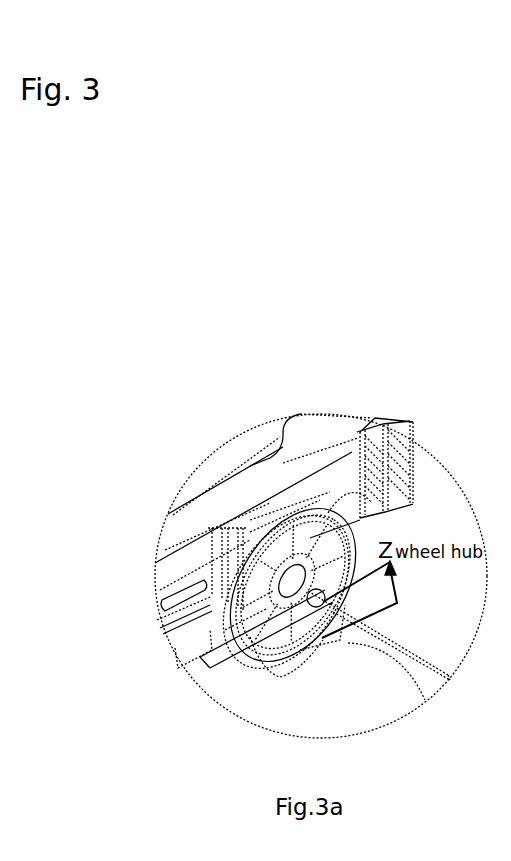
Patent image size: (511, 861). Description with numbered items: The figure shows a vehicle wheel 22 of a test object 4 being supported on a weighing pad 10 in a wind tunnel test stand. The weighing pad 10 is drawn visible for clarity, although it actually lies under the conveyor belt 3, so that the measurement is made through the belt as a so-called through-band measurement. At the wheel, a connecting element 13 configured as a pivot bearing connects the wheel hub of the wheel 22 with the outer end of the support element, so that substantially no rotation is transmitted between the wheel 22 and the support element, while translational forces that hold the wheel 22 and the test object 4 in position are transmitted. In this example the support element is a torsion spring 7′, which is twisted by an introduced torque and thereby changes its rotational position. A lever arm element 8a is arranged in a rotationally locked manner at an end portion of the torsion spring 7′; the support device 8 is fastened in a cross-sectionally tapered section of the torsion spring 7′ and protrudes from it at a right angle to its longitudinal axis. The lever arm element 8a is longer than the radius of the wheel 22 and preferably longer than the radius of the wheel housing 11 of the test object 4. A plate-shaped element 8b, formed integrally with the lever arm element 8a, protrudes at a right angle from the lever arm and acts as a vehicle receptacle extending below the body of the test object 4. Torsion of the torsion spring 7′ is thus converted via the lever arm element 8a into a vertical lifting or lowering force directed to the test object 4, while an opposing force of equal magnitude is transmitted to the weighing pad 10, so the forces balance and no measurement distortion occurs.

The conveyor belt 3 is at (348, 643).
The test object 4 is at (302, 452).
The torsion spring 7′ is at (378, 638).
The support device 8 is at (215, 673).
The lever arm element 8a is at (253, 652).
The plate-shaped element 8b is at (195, 652).
The weighing pad 10 is at (307, 657).
The wheel housing 11 is at (340, 503).
The connecting element 13 is at (297, 570).
The vehicle wheel 22 is at (275, 537).